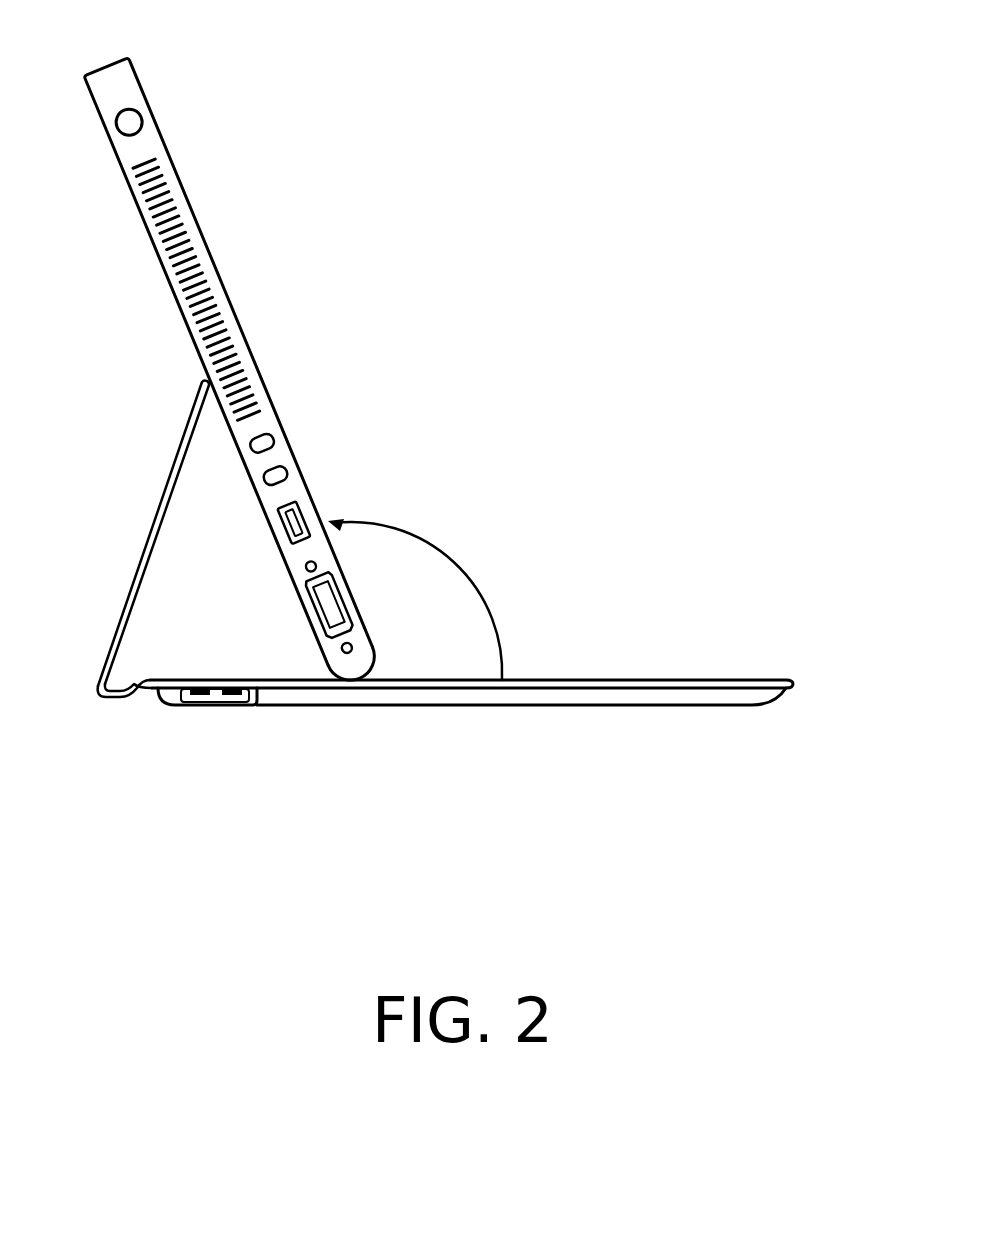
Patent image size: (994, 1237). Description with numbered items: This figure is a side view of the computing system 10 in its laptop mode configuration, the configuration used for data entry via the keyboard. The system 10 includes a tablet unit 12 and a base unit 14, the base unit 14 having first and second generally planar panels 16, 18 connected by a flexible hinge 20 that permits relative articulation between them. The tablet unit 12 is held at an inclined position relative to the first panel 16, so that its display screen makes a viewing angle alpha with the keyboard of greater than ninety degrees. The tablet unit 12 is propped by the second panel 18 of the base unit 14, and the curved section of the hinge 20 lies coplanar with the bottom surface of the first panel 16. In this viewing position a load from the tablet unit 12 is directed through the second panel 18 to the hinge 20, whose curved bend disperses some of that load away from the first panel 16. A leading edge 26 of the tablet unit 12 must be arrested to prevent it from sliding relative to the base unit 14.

The computing system 10 is at (285, 214).
The tablet unit 12 is at (149, 92).
The base unit 14 is at (756, 673).
The first panel 16 is at (755, 706).
The second panel 18 is at (112, 622).
The flexible hinge 20 is at (100, 699).
The leading edge 26 is at (387, 653).